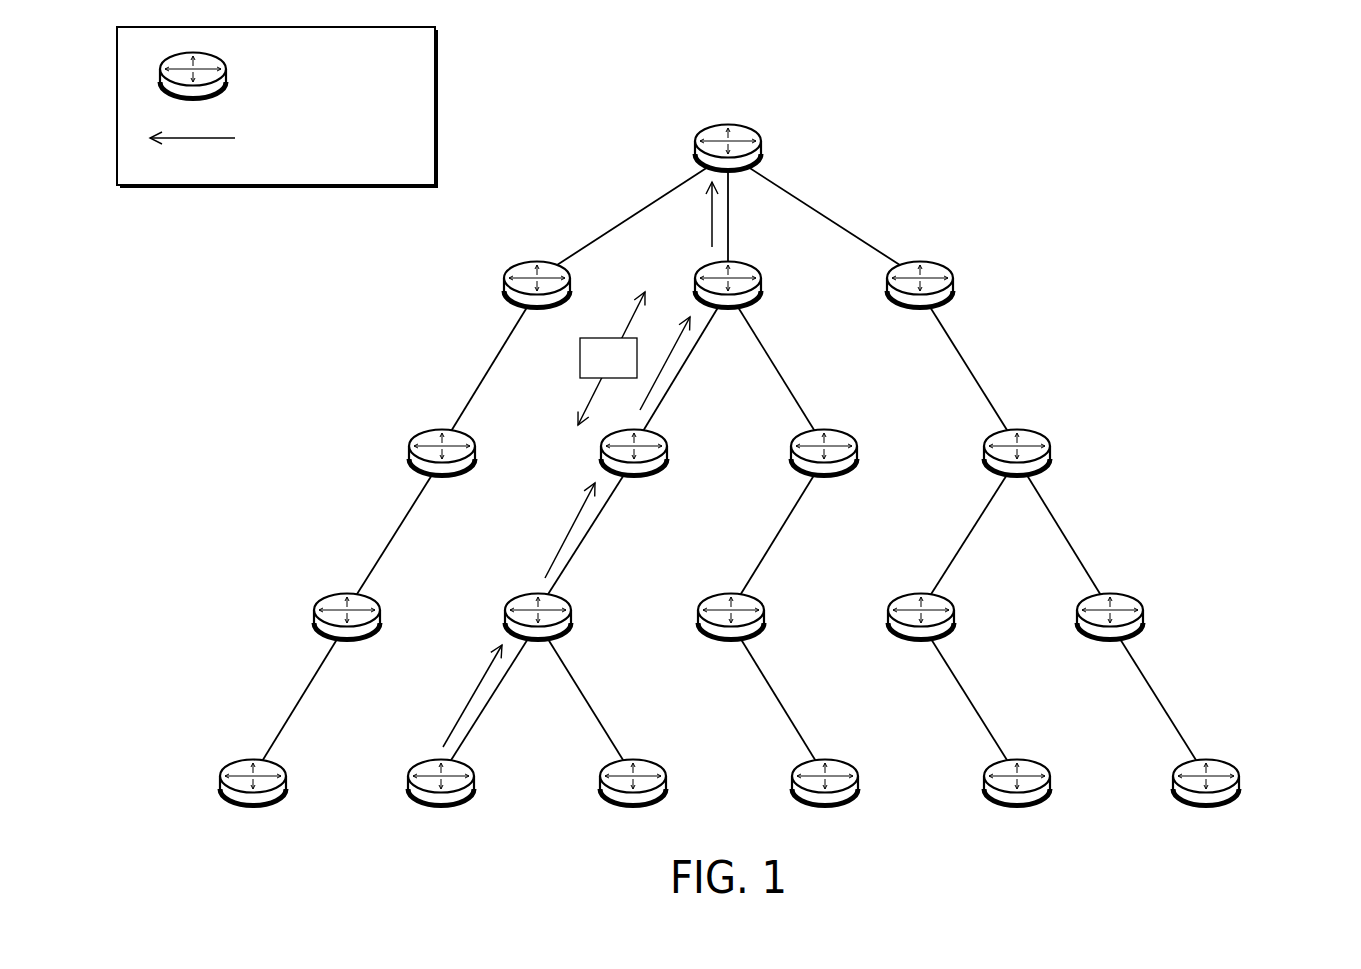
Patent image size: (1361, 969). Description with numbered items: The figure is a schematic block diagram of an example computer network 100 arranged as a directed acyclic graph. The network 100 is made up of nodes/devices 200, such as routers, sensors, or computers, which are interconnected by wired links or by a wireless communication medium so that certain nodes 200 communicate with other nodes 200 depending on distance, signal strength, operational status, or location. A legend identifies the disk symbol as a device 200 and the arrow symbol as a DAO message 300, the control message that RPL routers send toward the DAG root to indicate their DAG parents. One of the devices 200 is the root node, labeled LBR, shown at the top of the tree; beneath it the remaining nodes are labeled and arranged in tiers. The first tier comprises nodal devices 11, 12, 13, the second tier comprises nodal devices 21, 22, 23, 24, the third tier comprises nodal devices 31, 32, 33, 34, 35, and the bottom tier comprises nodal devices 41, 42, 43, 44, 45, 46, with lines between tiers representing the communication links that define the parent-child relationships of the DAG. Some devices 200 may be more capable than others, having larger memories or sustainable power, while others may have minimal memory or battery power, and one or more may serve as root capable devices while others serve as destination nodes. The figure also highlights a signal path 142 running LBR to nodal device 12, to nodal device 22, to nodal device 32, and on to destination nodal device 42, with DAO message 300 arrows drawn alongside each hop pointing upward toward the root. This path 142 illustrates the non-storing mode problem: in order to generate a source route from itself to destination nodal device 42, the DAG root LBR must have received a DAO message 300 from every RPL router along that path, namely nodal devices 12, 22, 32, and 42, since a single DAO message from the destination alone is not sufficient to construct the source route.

The computer network 100 is at (1234, 86).
The nodes/devices 200 is at (278, 76).
The DAO message 300 is at (255, 140).
The signal path 142 is at (592, 371).
The nodal device 11 is at (537, 304).
The nodal device 12 is at (728, 304).
The nodal device 13 is at (920, 304).
The nodal device 21 is at (442, 472).
The nodal device 22 is at (634, 472).
The nodal device 23 is at (824, 472).
The nodal device 24 is at (1017, 472).
The nodal device 31 is at (347, 636).
The nodal device 32 is at (538, 636).
The nodal device 33 is at (731, 636).
The nodal device 34 is at (921, 636).
The nodal device 35 is at (1110, 636).
The nodal device 41 is at (253, 802).
The destination nodal device 42 is at (441, 802).
The nodal device 43 is at (633, 802).
The nodal device 44 is at (825, 802).
The nodal device 45 is at (1017, 802).
The nodal device 46 is at (1206, 802).